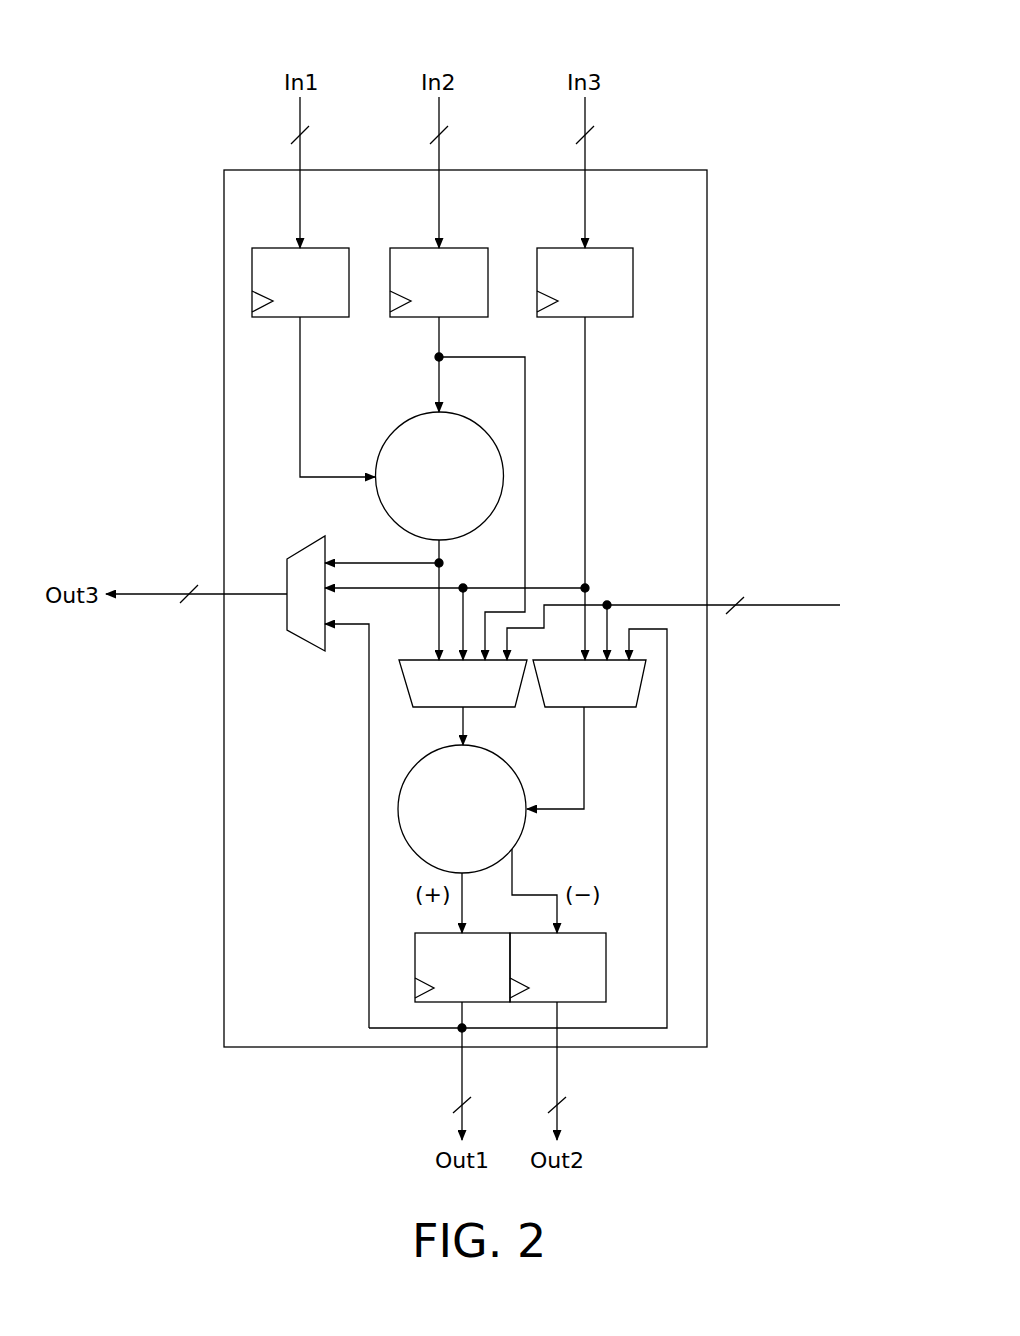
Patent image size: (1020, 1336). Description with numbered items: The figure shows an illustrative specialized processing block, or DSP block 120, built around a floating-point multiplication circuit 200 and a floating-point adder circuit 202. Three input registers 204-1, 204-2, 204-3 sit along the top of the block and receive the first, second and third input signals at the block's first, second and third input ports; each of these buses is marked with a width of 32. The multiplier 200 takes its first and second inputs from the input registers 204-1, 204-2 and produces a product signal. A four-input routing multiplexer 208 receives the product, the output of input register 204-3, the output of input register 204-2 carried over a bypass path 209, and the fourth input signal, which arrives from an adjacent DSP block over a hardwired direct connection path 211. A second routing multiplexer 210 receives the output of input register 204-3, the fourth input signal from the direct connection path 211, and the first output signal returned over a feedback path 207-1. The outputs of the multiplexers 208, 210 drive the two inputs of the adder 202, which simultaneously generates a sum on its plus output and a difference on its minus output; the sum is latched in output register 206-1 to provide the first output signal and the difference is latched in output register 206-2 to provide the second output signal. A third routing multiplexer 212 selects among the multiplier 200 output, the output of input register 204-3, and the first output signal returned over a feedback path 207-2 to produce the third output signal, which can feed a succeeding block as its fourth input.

The specialized processing block 120 is at (713, 68).
The input register 204-1 is at (327, 250).
The input register 204-2 is at (468, 250).
The input register 204-3 is at (609, 250).
The floating-point multiplication circuit 200 is at (405, 424).
The bypass path 209 is at (525, 377).
The routing multiplexer 212 is at (303, 552).
The hardwired direct connection path 211 is at (805, 603).
The routing multiplexer 208 is at (418, 702).
The routing multiplexer 210 is at (568, 702).
The floating-point adder circuit 202 is at (527, 815).
The output register 206-1 is at (462, 967).
The output register 206-2 is at (558, 967).
The feedback path 207-1 is at (667, 830).
The feedback path 207-2 is at (369, 880).
The 32-bit bus width 32 is at (468, 622).